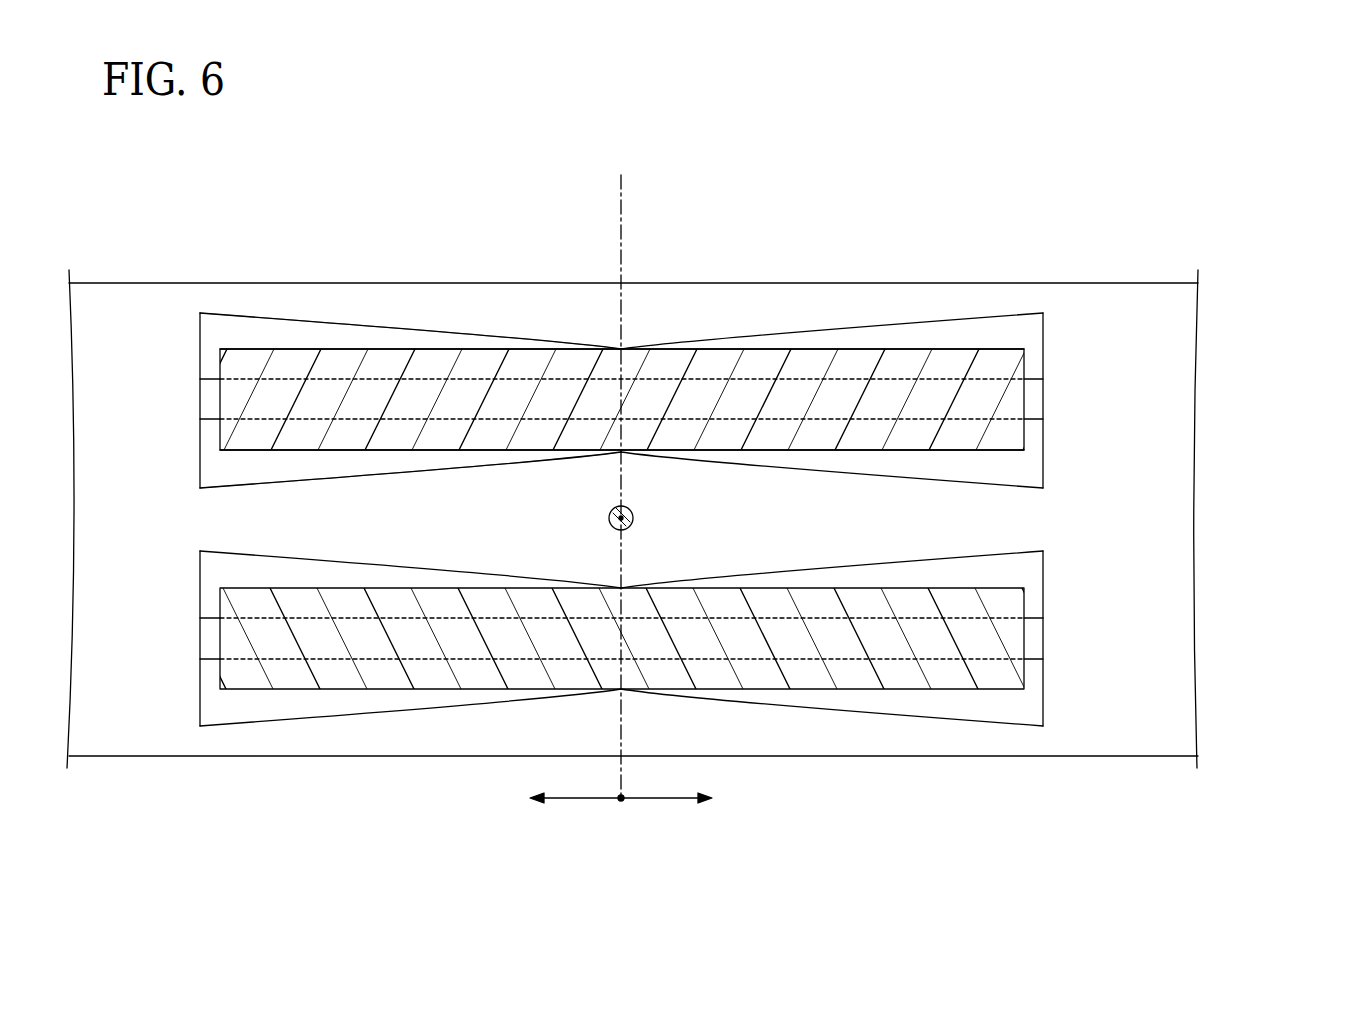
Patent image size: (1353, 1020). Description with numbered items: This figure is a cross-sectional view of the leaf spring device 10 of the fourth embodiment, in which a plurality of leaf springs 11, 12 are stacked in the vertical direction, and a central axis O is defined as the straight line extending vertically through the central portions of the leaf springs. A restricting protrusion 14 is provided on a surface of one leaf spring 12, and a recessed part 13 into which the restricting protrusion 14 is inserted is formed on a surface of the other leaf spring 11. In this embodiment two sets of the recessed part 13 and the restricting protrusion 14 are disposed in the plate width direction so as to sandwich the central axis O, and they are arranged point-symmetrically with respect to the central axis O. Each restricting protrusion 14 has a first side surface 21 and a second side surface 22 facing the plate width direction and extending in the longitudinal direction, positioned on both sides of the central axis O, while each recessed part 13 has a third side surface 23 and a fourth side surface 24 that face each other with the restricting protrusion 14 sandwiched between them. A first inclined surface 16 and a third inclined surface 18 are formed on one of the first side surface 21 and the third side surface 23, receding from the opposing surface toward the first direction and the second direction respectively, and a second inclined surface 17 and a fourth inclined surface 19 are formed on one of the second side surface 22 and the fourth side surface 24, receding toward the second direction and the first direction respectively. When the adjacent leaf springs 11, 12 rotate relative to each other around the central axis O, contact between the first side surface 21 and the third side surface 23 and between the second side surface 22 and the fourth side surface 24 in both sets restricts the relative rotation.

The actuator device 10 is at (1195, 180).
The leaf spring 11 is at (1052, 275).
The leaf spring 12 is at (648, 519).
The recessed part 13 is at (1030, 467).
The restricting protrusion 14 is at (1028, 340).
The first inclined surface 16 is at (768, 335).
The second inclined surface 17 is at (383, 475).
The third inclined surface 18 is at (394, 329).
The fourth inclined surface 19 is at (927, 480).
The first side surface 21 is at (930, 342).
The second side surface 22 is at (875, 462).
The third side surface 23 is at (310, 330).
The fourth side surface 24 is at (308, 468).
The central axis O is at (627, 507).